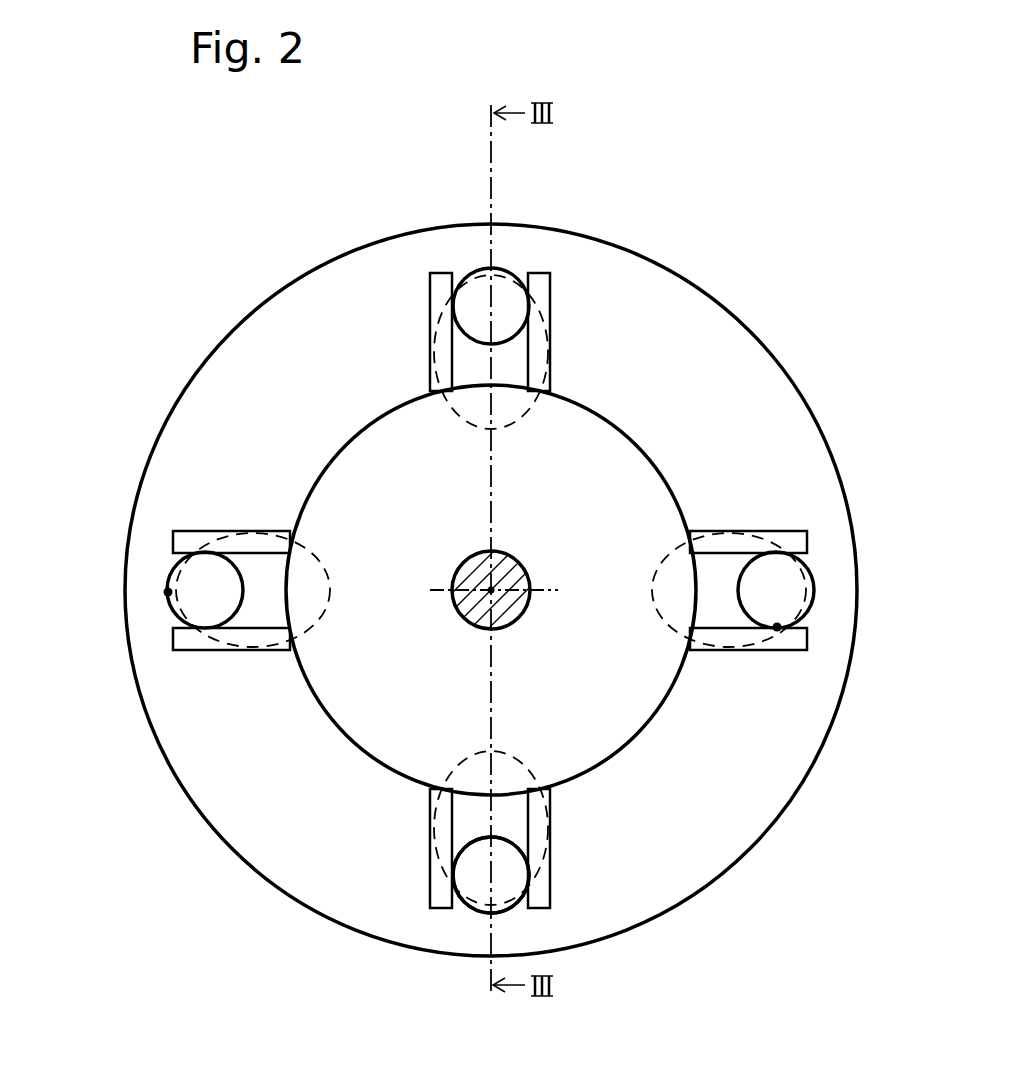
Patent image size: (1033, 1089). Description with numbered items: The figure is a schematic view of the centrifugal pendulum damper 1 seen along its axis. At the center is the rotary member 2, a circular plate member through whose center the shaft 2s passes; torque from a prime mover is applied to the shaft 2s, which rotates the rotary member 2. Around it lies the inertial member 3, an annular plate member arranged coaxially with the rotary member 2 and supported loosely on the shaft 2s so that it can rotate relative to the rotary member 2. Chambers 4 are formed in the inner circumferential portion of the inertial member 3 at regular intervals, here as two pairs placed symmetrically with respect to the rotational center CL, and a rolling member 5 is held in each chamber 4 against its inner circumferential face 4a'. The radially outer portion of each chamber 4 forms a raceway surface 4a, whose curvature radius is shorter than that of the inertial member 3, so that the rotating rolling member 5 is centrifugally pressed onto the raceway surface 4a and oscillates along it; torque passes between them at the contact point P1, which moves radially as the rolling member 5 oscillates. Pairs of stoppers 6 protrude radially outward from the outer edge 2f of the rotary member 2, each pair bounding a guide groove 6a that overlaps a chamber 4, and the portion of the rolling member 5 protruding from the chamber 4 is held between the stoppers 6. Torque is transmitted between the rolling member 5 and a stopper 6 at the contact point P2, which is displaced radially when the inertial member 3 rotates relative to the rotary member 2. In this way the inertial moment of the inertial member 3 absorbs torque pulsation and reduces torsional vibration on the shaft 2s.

The centrifugal pendulum damper 1 is at (733, 195).
The rotary member 2 is at (398, 463).
The outer edge of the rotary member 2f is at (657, 465).
The shaft 2s is at (468, 608).
The inertial member 3 is at (712, 333).
The chamber 4 is at (465, 822).
The raceway surface 4a is at (508, 945).
The inner circumferential face 4a' is at (491, 875).
The rolling member 5 is at (507, 293).
The stopper 6 is at (795, 533).
The guide groove 6a is at (813, 568).
The contact point P1 is at (168, 592).
The contact point P2 is at (777, 627).
The rotational center CL is at (493, 598).